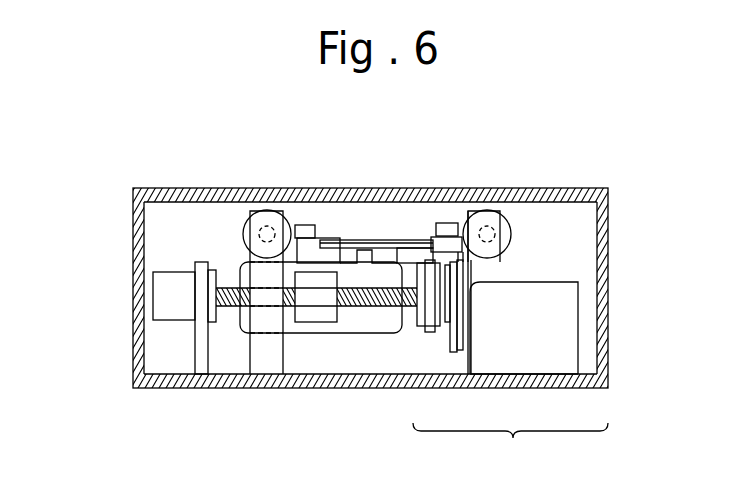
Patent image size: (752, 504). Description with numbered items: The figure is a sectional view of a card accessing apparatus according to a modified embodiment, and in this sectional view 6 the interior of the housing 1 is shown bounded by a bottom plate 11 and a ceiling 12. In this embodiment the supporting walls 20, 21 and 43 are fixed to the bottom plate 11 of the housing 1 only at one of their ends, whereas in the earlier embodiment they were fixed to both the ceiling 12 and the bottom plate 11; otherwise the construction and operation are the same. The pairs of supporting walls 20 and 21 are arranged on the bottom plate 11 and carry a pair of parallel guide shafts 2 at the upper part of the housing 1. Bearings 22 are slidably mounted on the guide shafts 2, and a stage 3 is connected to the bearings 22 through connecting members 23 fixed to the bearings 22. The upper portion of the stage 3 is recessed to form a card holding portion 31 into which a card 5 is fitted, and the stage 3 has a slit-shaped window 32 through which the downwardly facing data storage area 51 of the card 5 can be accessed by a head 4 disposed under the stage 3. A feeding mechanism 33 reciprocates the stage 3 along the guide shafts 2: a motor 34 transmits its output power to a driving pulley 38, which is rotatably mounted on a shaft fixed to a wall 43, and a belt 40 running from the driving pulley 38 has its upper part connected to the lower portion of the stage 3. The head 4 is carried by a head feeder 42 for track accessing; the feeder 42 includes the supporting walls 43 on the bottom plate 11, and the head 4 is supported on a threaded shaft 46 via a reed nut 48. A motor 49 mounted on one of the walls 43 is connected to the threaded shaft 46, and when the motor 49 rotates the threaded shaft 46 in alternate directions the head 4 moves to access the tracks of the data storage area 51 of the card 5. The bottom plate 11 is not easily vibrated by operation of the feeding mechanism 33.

The housing 1 is at (610, 187).
The guide shafts 2 is at (265, 228).
The stage 3 is at (330, 253).
The head 4 is at (298, 335).
The card 5 is at (380, 236).
The carriage 6 is at (358, 320).
The bottom plate 11 is at (545, 376).
The ceiling 12 is at (552, 192).
The supporting walls 20 is at (495, 275).
The supporting walls 21 is at (256, 248).
The bearings 22 is at (243, 224).
The connecting members 23 is at (305, 230).
The card holding portion 31 is at (430, 238).
The window 32 is at (378, 257).
The feeding mechanism 33 is at (510, 445).
The motor 34 is at (557, 358).
The driving pulley 38 is at (428, 322).
The belt 40 is at (453, 325).
The head feeder 42 is at (175, 329).
The supporting walls 43 is at (197, 355).
The threaded shaft 46 is at (385, 306).
The reed nut 48 is at (318, 310).
The motor 49 is at (167, 302).
The data storage area 51 is at (357, 243).